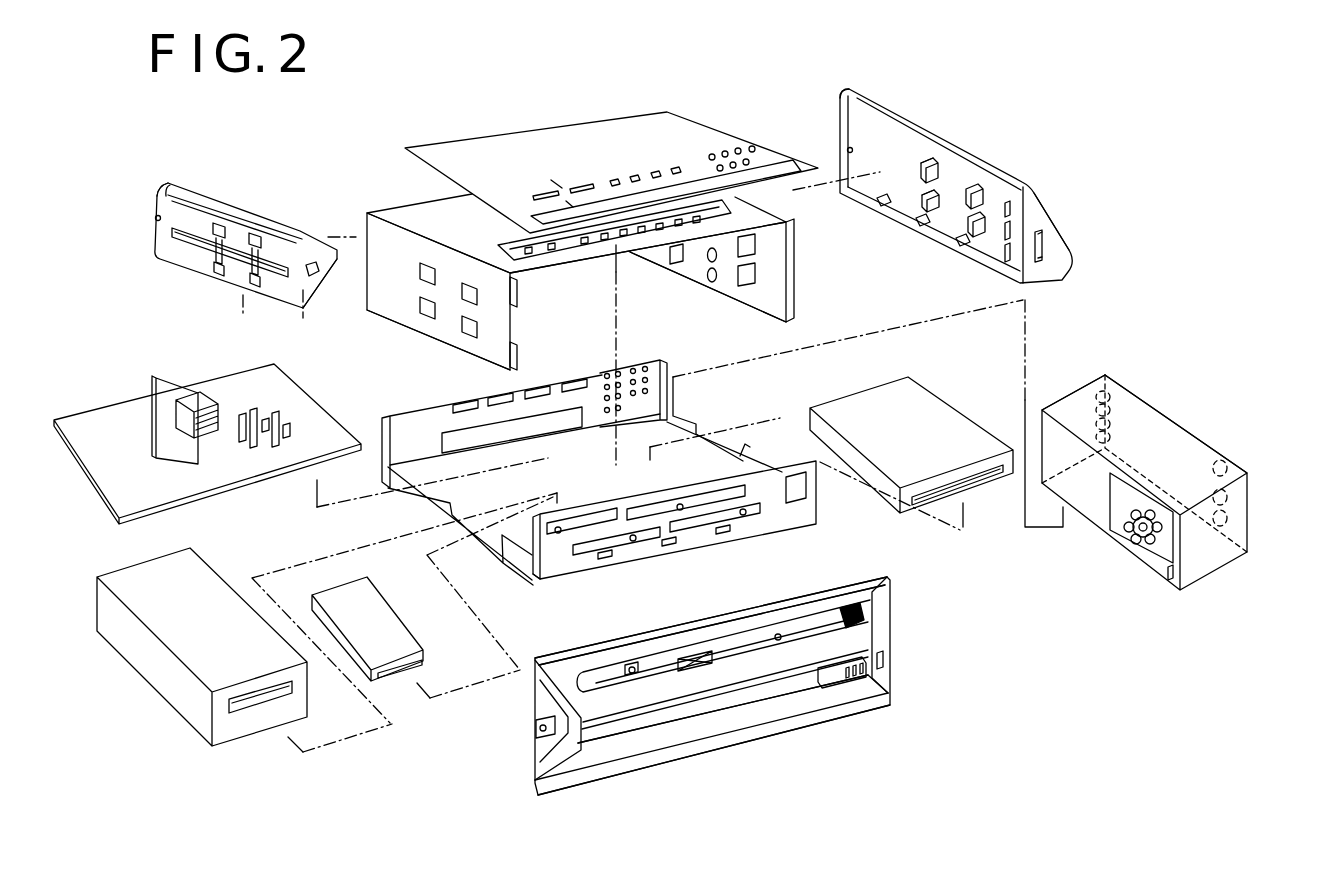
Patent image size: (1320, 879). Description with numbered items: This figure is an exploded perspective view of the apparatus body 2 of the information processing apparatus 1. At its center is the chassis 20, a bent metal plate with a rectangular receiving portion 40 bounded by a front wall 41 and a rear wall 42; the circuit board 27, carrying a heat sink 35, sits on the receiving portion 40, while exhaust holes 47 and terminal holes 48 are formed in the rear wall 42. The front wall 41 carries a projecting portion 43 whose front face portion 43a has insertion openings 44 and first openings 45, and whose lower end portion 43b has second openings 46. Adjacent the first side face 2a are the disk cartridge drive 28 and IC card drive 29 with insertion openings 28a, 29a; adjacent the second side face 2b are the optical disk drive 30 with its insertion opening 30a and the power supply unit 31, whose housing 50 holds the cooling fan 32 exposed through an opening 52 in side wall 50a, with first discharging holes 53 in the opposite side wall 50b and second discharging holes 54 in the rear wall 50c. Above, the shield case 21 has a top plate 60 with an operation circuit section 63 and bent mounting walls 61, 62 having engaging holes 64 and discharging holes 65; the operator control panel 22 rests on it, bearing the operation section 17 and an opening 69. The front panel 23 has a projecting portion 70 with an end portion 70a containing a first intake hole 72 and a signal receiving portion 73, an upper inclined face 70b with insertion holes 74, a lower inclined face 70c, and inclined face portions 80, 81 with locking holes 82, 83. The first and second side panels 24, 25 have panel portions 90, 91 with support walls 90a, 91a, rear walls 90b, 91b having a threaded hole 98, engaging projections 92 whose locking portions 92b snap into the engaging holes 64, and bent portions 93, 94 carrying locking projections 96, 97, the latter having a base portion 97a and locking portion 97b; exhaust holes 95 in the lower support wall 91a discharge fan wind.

The information processing apparatus 1 is at (443, 474).
The apparatus body 2 is at (312, 129).
The first side face 2a is at (420, 502).
The second side face 2b is at (677, 400).
The operation section 17 is at (555, 180).
The chassis 20 is at (502, 548).
The shield case 21 is at (403, 213).
The operator control panel 22 is at (492, 147).
The front panel 23 is at (865, 769).
The first side panel 24 is at (183, 263).
The second side panel 25 is at (1017, 168).
The circuit board 27 is at (263, 464).
The disk cartridge drive 28 is at (198, 568).
The insertion opening 28a is at (236, 702).
The IC card drive 29 is at (378, 611).
The insertion opening 29a is at (391, 679).
The optical disk drive 30 is at (950, 415).
The insertion opening 30a is at (986, 480).
The power supply unit 31 is at (1173, 432).
The cooling fan 32 is at (1142, 555).
The heat sink 35 is at (263, 420).
The receiving portion 40 is at (707, 460).
The front wall 41 is at (807, 508).
The rear wall 42 is at (403, 423).
The projecting portion 43 is at (778, 477).
The front face portion 43a is at (800, 530).
The lower end portion 43b is at (537, 575).
The insertion openings 44 is at (558, 532).
The first openings 45 is at (630, 548).
The second openings 46 is at (597, 550).
The exhaust holes 47 is at (630, 373).
The terminal holes 48 is at (556, 410).
The housing 50 is at (1200, 453).
The side wall 50a is at (1083, 502).
The opposite side wall 50b is at (1150, 423).
The rear wall 50c is at (1067, 423).
The opening 52 is at (1169, 582).
The first discharging holes 53 is at (1246, 468).
The second discharging holes 54 is at (1100, 390).
The top plate 60 is at (460, 213).
The mounting wall 61 is at (393, 307).
The mounting wall 62 is at (797, 270).
The operation circuit section 63 is at (697, 217).
The engaging holes 64 is at (418, 277).
The discharging holes 65 is at (712, 282).
The opening 69 is at (643, 207).
The projecting portion 70 is at (873, 643).
The end portion 70a is at (887, 687).
The upper inclined face 70b is at (868, 595).
The lower inclined face 70c is at (877, 713).
The first intake hole 72 is at (655, 708).
The signal receiving portion 73 is at (595, 730).
The insertion holes 74 is at (630, 665).
The inclined face portion 80 is at (556, 703).
The inclined face portion 81 is at (882, 618).
The locking hole 82 is at (538, 740).
The locking hole 83 is at (887, 660).
The panel portion 90 is at (235, 228).
The support wall 90a is at (280, 227).
The rear wall 90b is at (165, 185).
The panel portion 91 is at (877, 92).
The support wall 91a is at (880, 175).
The rear wall 91b is at (846, 108).
The engaging projections 92 is at (1023, 135).
The locking portion 92b is at (927, 160).
The bent portion 93 is at (313, 250).
The bent portion 94 is at (1057, 222).
The exhaust holes 95 is at (887, 203).
The locking projection 96 is at (312, 304).
The locking projection 97 is at (1053, 267).
The base portion 97a is at (1053, 240).
The locking portion 97b is at (1050, 253).
The threaded hole 98 is at (153, 217).